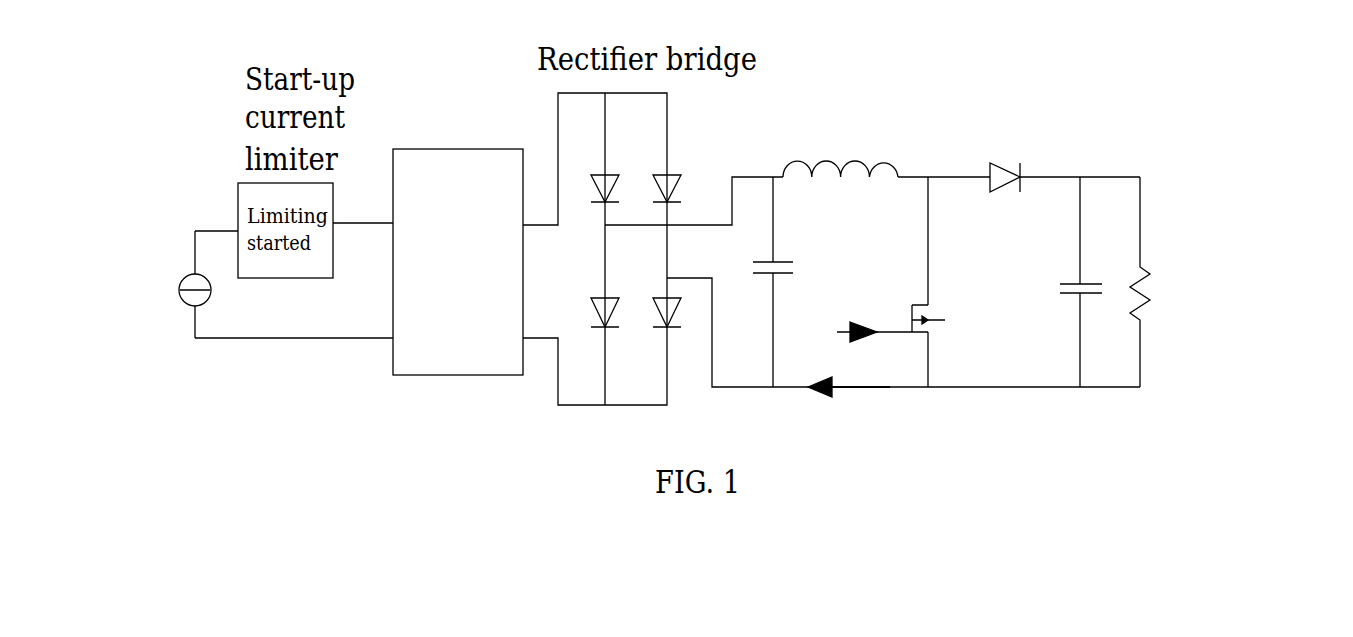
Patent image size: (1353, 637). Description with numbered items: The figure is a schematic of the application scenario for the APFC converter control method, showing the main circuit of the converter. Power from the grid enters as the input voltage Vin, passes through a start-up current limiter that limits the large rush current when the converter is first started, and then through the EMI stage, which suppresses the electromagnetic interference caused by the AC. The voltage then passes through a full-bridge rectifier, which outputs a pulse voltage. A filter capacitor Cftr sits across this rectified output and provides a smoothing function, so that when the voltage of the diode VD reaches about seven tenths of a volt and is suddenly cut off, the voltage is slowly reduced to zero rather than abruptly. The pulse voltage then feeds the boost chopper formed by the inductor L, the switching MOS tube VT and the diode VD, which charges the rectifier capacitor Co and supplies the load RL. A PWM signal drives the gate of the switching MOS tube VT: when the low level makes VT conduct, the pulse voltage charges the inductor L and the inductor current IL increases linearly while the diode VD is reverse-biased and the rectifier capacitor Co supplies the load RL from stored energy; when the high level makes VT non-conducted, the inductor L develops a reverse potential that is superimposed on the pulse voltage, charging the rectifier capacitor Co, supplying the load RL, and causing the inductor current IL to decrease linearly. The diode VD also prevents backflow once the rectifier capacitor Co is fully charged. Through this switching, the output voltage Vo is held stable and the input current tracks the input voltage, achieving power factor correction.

The input voltage Vin is at (165, 293).
The element EMI is at (458, 245).
The filter capacitor Cftr is at (754, 282).
The inductor L is at (840, 151).
The diode VD is at (1008, 161).
The switching MOS tube VT is at (951, 282).
The PWM signal PWM is at (855, 315).
The inductor current IL is at (849, 404).
The rectifier capacitor Co is at (1064, 282).
The load RL is at (1162, 282).
The output voltage Vo is at (1244, 291).